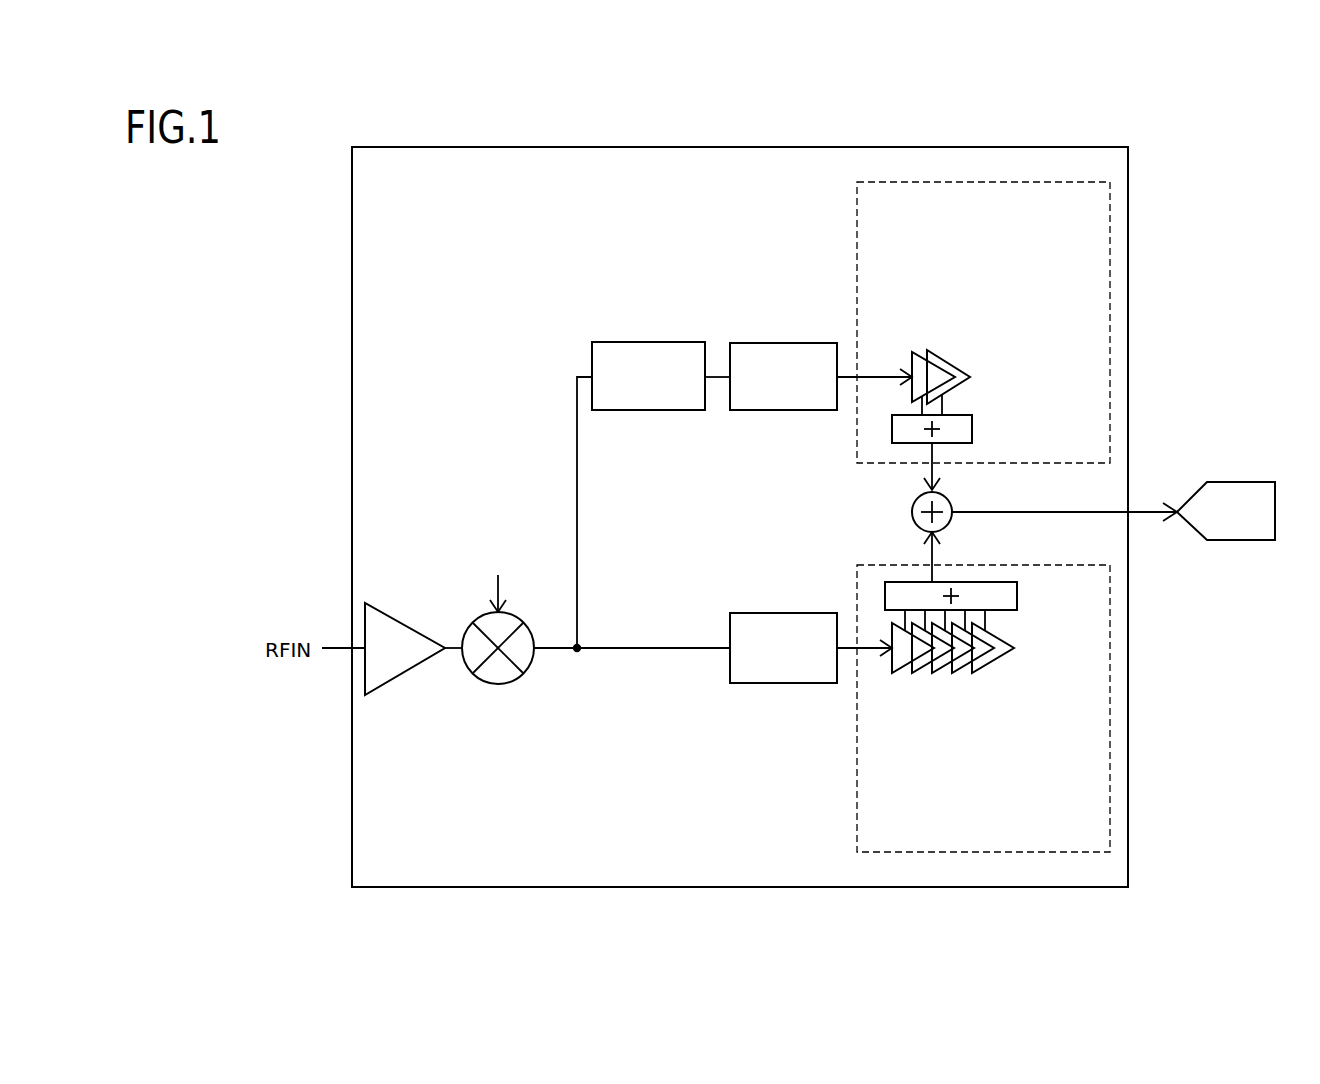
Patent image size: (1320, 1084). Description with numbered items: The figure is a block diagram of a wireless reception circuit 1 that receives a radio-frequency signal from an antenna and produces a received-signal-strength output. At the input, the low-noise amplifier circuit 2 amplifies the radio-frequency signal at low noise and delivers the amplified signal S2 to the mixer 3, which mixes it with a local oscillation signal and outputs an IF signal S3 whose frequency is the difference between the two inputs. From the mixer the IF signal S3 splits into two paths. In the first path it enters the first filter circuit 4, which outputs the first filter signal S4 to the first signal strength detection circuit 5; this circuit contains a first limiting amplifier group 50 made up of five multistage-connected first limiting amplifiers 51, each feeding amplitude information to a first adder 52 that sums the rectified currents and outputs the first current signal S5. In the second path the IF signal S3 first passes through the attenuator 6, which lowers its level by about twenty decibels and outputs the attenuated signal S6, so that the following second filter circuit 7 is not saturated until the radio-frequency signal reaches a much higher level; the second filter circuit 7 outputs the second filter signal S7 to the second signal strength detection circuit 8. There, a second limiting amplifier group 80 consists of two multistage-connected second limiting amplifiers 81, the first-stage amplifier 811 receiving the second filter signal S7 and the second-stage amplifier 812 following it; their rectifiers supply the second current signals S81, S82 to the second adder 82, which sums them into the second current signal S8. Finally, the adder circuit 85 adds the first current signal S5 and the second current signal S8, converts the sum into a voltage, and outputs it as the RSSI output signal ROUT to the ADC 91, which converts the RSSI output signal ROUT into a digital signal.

The wireless reception circuit 1 is at (352, 346).
The low-noise amplifier circuit 2 is at (403, 624).
The mixer 3 is at (503, 684).
The first filter circuit 4 is at (752, 685).
The first signal strength detection circuit 5 is at (857, 815).
The attenuator 6 is at (636, 412).
The second filter circuit 7 is at (780, 412).
The second signal strength detection circuit 8 is at (857, 221).
The first limiting amplifier group 50 is at (933, 673).
The first limiting amplifier 51 is at (890, 655).
The first adder 52 is at (1017, 595).
The second limiting amplifier group 80 is at (913, 337).
The second limiting amplifier 81 is at (913, 337).
The first-stage second limiting amplifier 811 is at (906, 370).
The second-stage second limiting amplifier 812 is at (1011, 375).
The second adder 82 is at (972, 430).
The adder circuit 85 is at (914, 523).
The ADC 91 is at (1250, 482).
The amplified signal S2 is at (450, 652).
The IF signal S3 is at (562, 652).
The first filter signal S4 is at (848, 645).
The first current signal S5 is at (945, 552).
The attenuated signal S6 is at (718, 380).
The second filter signal S7 is at (848, 378).
The second current signal S8 is at (936, 472).
The second current signal S81 is at (922, 410).
The second current signal S82 is at (942, 404).
The RSSI output signal ROUT is at (1150, 515).